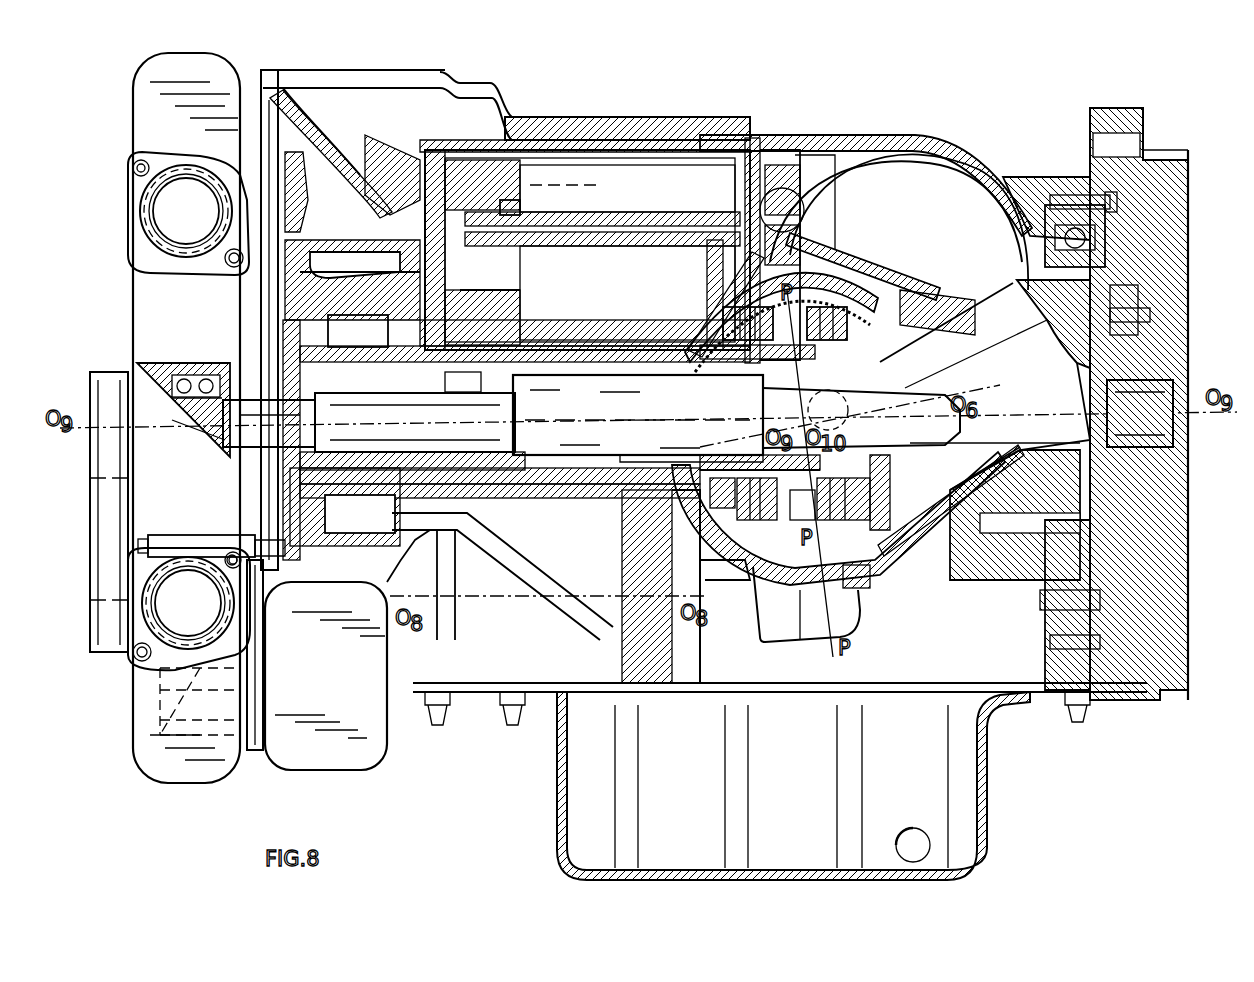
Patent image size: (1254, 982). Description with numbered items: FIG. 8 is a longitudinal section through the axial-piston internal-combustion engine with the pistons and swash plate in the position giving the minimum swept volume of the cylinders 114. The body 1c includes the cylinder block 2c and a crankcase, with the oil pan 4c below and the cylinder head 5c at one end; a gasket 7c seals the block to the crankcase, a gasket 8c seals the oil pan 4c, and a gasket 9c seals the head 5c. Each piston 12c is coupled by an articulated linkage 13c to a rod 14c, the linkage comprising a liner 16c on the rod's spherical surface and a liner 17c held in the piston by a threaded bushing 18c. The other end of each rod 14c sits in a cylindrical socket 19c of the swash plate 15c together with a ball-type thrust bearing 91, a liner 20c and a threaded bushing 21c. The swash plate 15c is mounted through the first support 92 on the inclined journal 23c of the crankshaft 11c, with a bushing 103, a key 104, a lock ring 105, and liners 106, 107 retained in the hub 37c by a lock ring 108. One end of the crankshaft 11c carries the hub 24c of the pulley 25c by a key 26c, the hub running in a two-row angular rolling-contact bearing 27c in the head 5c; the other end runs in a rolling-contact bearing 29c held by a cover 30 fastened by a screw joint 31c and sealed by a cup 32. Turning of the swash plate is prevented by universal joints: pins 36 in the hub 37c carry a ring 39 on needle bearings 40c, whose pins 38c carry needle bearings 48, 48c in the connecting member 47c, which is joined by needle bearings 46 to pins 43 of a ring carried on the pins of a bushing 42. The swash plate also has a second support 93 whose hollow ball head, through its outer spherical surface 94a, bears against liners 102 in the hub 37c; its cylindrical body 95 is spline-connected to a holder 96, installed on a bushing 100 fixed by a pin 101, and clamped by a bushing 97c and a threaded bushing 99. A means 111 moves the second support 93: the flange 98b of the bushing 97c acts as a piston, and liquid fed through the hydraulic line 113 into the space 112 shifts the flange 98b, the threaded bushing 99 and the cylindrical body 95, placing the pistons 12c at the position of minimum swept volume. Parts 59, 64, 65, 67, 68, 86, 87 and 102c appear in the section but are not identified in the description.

The body 1c is at (482, 82).
The cylinder block 2c is at (655, 117).
The oil pan 4c is at (985, 802).
The cylinder head 5c is at (152, 318).
The gasket 7c is at (752, 138).
The gasket 8c is at (1030, 700).
The gasket 9c is at (250, 680).
The crankshaft 11c is at (625, 437).
The piston 12c is at (520, 172).
The articulated linkage 13c is at (522, 210).
The rod 14c is at (635, 248).
The swash plate 15c is at (875, 275).
The liner 16c is at (482, 185).
The liner 17c is at (520, 262).
The threaded bushing 18c is at (520, 280).
The cylindrical socket 19c is at (778, 190).
The liner 20c is at (768, 175).
The threaded bushing 21c is at (605, 176).
The inclined journal 23c is at (980, 345).
The hub 24c is at (180, 405).
The pulley 25c is at (95, 384).
The key 26c is at (200, 425).
The two-row angular rolling-contact bearing 27c is at (182, 398).
The rolling-contact bearing 29c is at (1045, 190).
The cover 30 is at (1105, 230).
The screw joint 31c is at (1120, 200).
The cup 32 is at (1150, 318).
The pins 36 is at (750, 515).
The hub 37c is at (895, 298).
The pins 38c is at (812, 512).
The ring 39 is at (875, 490).
The needle bearings 40c is at (880, 530).
The bushing 42 is at (650, 400).
The pins 43 is at (740, 465).
The needle bearings 46 is at (753, 255).
The connecting member 47c is at (765, 585).
The needle bearings 48 is at (900, 408).
The needle bearings 48c is at (815, 280).
The liner 59 is at (590, 140).
The housing wall 64 is at (360, 100).
The housing 65 is at (365, 205).
The end cover 67 is at (1180, 570).
The end plate 68 is at (1190, 165).
The bolt 86 is at (300, 535).
The sleeve 87 is at (445, 468).
The ball-type thrust bearing 91 is at (795, 190).
The first support 92 is at (940, 285).
The second support 93 is at (688, 510).
The outer spherical surface 94a is at (830, 598).
The cylindrical body 95 is at (490, 490).
The holder 96 is at (530, 495).
The bushing 97c is at (345, 507).
The flange 98b is at (1020, 345).
The threaded bushing 99 is at (358, 434).
The bushing 100 is at (705, 458).
The pin 101 is at (492, 382).
The liners 102 is at (858, 588).
The bracket 102c is at (745, 565).
The bushing 103 is at (880, 340).
The key 104 is at (870, 428).
The lock ring 105 is at (835, 400).
The liner 106 is at (915, 285).
The liner 107 is at (975, 295).
The lock ring 108 is at (965, 318).
The means for moving the second support 111 is at (440, 540).
The space 112 is at (355, 552).
The hydraulic line 113 is at (545, 553).
The cylinders 114 is at (760, 133).